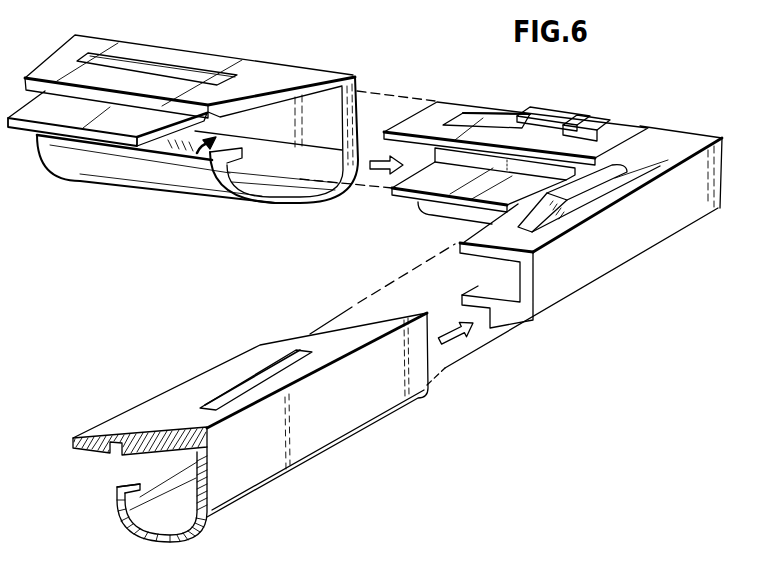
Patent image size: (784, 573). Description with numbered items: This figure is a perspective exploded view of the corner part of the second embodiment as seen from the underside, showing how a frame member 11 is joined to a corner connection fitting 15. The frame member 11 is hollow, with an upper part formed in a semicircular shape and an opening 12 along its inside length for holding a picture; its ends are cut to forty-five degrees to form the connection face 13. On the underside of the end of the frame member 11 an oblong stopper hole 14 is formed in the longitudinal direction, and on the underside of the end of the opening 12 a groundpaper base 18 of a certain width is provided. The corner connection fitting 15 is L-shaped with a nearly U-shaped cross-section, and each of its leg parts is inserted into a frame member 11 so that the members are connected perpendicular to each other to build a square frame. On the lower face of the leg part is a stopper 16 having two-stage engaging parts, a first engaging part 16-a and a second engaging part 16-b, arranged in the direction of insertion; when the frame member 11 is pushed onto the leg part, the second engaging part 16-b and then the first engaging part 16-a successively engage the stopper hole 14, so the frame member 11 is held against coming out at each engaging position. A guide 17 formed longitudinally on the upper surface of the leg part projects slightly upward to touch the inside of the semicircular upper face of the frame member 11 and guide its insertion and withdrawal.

The frame member 11 is at (278, 71).
The opening 12 is at (200, 150).
The connection face 13 is at (327, 88).
The stopper hole 14 is at (176, 70).
The corner connection fitting 15 is at (683, 208).
The stopper 16 is at (490, 121).
The first engaging part 16-a is at (615, 168).
The second engaging part 16-b is at (573, 188).
The guide 17 is at (512, 318).
The groundpaper base 18 is at (100, 122).